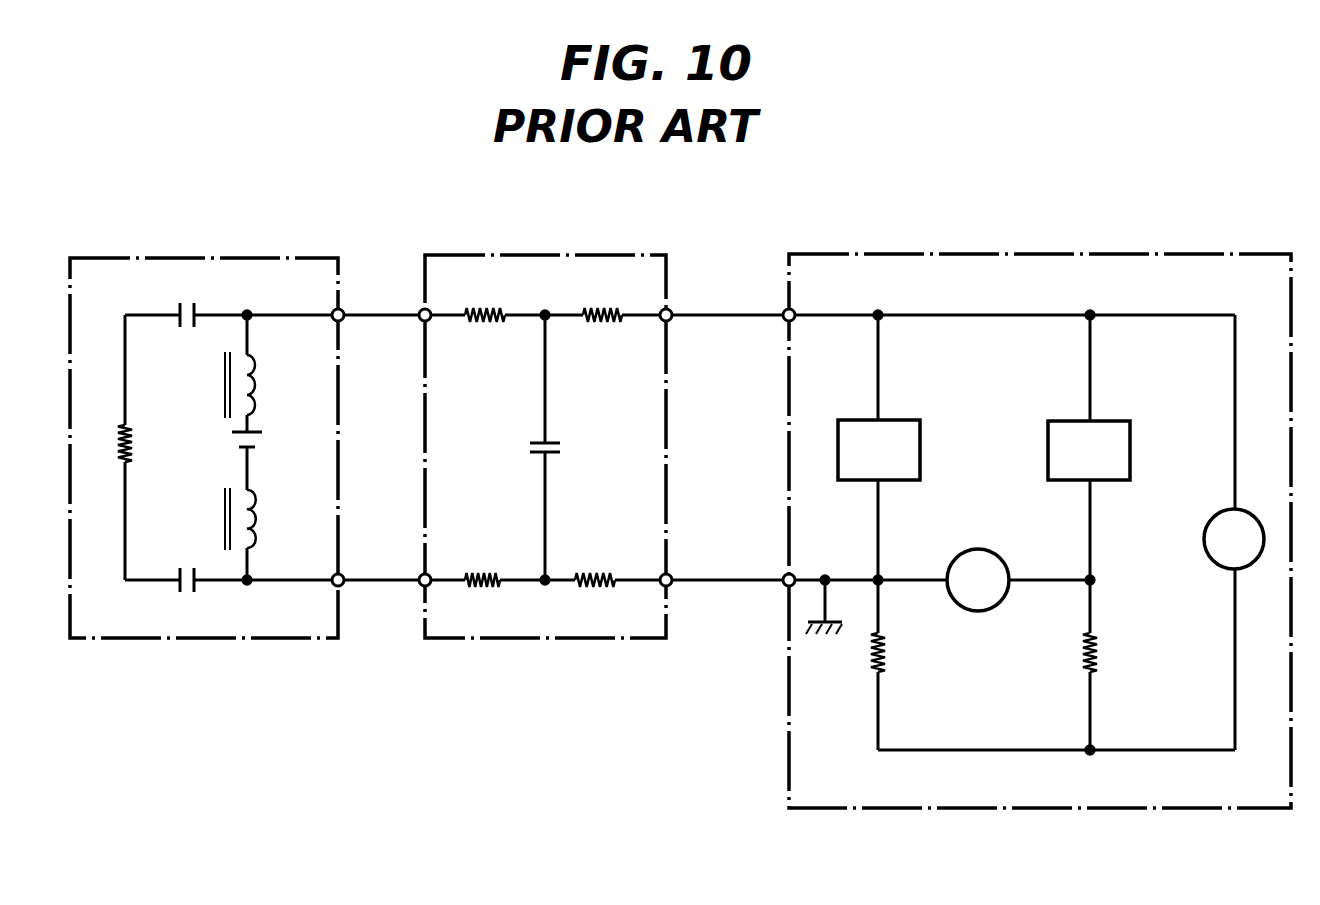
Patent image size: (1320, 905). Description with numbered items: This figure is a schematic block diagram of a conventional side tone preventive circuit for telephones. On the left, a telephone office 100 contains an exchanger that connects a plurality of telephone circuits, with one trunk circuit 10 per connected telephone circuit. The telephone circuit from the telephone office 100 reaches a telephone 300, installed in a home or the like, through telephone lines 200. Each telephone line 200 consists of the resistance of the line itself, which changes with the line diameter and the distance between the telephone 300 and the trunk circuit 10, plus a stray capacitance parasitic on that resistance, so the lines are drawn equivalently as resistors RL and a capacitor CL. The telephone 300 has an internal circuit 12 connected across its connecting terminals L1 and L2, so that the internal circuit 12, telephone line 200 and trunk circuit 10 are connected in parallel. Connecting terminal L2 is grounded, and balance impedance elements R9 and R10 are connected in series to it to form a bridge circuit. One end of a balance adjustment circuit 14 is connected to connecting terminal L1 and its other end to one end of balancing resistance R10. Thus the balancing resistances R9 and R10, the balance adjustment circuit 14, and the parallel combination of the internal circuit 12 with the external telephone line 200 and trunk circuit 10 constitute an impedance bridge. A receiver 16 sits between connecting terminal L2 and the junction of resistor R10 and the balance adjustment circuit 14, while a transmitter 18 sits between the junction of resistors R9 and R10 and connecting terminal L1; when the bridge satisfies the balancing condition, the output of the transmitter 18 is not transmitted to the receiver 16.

The telephone office 100 is at (250, 258).
The telephone line 200 is at (545, 416).
The telephone 300 is at (1009, 501).
The trunk circuit 10 is at (211, 588).
The internal circuit 12 is at (893, 420).
The balance adjustment circuit 14 is at (1104, 421).
The receiver 16 is at (1000, 559).
The transmitter 18 is at (1204, 540).
The connecting terminal L1 is at (783, 321).
The connecting terminal L2 is at (783, 585).
The resistor RL is at (483, 325).
The capacitor CL is at (554, 456).
The balance impedance element R9 is at (886, 653).
The balance impedance element R10 is at (1098, 653).